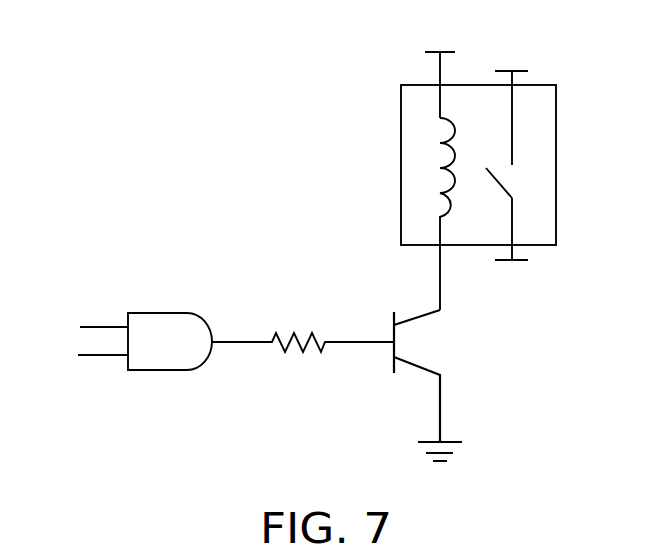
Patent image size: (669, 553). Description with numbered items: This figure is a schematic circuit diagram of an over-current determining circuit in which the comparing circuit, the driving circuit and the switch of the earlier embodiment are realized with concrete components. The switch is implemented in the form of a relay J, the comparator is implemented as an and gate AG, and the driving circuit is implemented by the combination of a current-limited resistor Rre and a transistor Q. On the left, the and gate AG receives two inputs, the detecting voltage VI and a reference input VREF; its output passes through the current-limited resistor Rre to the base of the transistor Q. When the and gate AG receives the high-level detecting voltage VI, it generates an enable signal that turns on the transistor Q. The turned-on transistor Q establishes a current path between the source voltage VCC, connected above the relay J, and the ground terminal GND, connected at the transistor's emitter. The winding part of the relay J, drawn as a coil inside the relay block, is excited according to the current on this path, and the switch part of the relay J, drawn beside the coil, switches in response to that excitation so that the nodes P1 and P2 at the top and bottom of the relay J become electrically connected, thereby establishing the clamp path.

The relay J is at (556, 167).
The source voltage VCC is at (443, 65).
The node P1 is at (507, 117).
The node P2 is at (511, 248).
The transistor Q is at (392, 352).
The ground terminal GND is at (440, 473).
The current-limited resistor Rre is at (303, 366).
The and gate AG is at (172, 313).
The detecting voltage VI is at (92, 324).
The reference voltage VREF is at (79, 356).